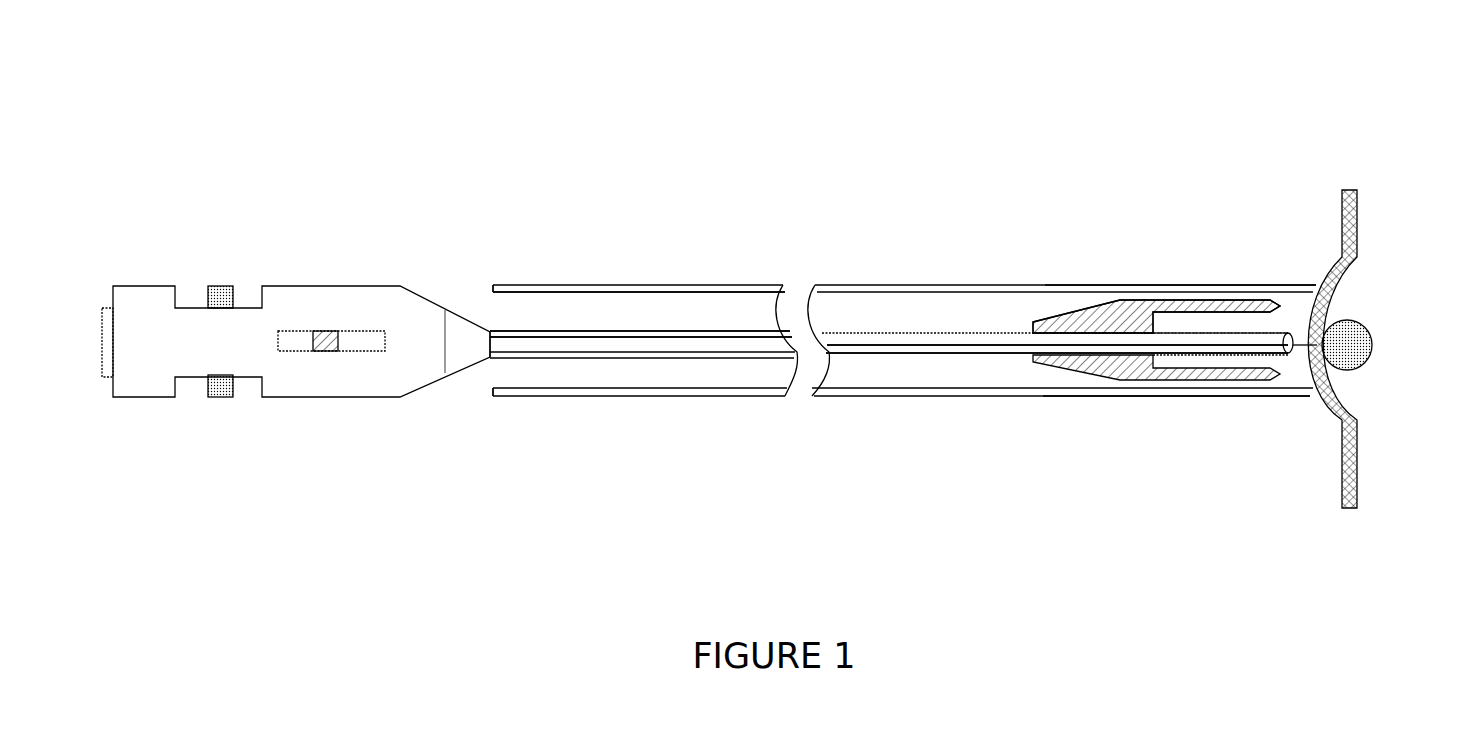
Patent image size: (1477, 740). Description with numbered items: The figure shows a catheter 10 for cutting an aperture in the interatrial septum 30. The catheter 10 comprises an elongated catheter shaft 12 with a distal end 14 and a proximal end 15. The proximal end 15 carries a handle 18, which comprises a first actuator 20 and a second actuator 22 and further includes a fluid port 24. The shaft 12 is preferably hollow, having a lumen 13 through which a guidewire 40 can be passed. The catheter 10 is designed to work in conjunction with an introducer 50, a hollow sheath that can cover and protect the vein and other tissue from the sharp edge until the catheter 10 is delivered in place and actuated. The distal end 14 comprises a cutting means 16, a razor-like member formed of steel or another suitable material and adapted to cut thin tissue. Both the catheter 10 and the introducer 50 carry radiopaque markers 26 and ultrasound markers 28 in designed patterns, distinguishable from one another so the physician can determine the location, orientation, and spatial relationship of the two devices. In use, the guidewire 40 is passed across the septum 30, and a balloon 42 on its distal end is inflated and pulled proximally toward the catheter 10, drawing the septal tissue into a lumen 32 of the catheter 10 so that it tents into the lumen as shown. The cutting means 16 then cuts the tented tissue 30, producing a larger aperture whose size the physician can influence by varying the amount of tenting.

The catheter 10 is at (680, 317).
The elongated catheter shaft 12 is at (615, 353).
The lumen 13 is at (740, 342).
The distal end 14 is at (1227, 467).
The proximal end 15 is at (513, 377).
The cutting means 16 is at (1110, 322).
The handle 18 is at (282, 418).
The first actuator 20 is at (330, 351).
The second actuator 22 is at (223, 300).
The fluid port 24 is at (109, 357).
The radiopaque markers 26 is at (1310, 393).
The ultrasound markers 28 is at (1313, 288).
The interatrial septum 30 is at (1348, 200).
The lumen 32 is at (1198, 327).
The guidewire 40 is at (982, 345).
The balloon 42 is at (1353, 343).
The introducer 50 is at (888, 285).